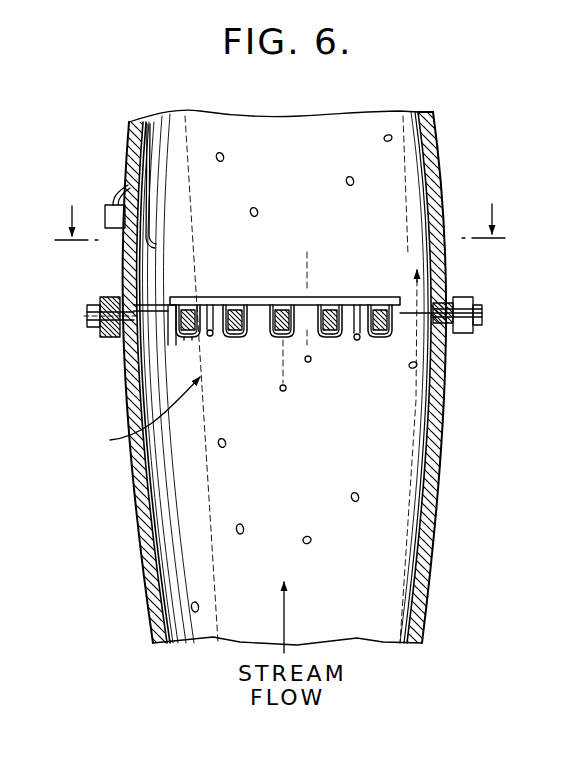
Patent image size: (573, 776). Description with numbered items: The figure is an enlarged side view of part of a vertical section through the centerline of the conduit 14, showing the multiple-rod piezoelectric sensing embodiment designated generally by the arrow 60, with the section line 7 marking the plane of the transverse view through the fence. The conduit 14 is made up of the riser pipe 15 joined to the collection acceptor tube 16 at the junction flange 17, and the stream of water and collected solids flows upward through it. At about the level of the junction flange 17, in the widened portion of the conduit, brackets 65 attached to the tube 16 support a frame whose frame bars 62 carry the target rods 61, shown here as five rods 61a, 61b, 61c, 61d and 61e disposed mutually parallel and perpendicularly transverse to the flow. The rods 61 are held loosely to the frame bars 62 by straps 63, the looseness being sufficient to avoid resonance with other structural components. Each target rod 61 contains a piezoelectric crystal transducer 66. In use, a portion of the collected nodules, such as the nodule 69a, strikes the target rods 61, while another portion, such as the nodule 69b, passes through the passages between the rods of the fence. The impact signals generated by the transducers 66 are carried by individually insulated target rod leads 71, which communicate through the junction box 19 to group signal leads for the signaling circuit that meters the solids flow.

The section line 7 is at (279, 222).
The conduit 14 is at (94, 138).
The riser pipe 15 is at (430, 176).
The collection acceptor tube 16 is at (444, 434).
The junction flange 17 is at (123, 349).
The junction box 19 is at (105, 207).
The fencelike embodiment 60 is at (143, 414).
The target rods 61 is at (174, 327).
The target rod 61a is at (186, 305).
The target rod 61b is at (236, 305).
The target rod 61c is at (278, 305).
The target rod 61d is at (329, 305).
The target rod 61e is at (379, 305).
The frame bars 62 is at (259, 296).
The straps 63 is at (186, 340).
The brackets 65 is at (213, 337).
The piezoelectric crystal transducer 66 is at (279, 340).
The nodule 69a is at (287, 390).
The nodule 69b is at (312, 359).
The target rod leads 71 is at (157, 243).